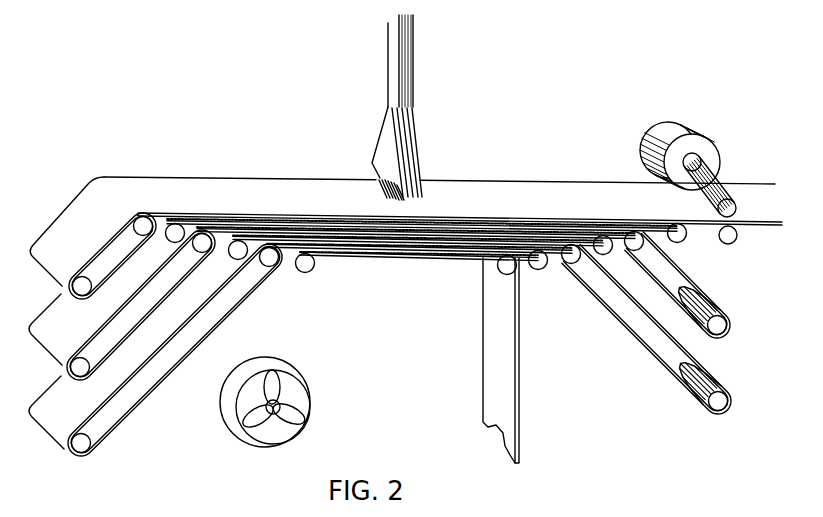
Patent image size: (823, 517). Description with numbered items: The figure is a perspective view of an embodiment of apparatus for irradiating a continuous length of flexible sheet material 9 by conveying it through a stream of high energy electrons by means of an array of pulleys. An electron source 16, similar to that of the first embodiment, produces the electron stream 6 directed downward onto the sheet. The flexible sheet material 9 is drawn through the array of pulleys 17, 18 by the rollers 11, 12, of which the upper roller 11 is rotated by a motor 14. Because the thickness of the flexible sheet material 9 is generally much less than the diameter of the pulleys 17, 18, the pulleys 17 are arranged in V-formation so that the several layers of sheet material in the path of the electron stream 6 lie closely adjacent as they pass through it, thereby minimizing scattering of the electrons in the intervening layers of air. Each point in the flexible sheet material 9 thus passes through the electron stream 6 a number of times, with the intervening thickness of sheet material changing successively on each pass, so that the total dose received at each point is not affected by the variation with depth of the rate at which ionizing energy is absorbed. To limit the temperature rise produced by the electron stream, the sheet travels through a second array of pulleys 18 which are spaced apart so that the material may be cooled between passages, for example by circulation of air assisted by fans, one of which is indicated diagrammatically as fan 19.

The electron stream 6 is at (379, 179).
The flexible sheet material 9 is at (521, 374).
The upper roller 11 is at (699, 185).
The roller 12 is at (732, 245).
The motor 14 is at (660, 126).
The electron source 16 is at (416, 67).
The pulleys 17 is at (278, 268).
The pulleys 18 is at (84, 380).
The fan 19 is at (268, 446).